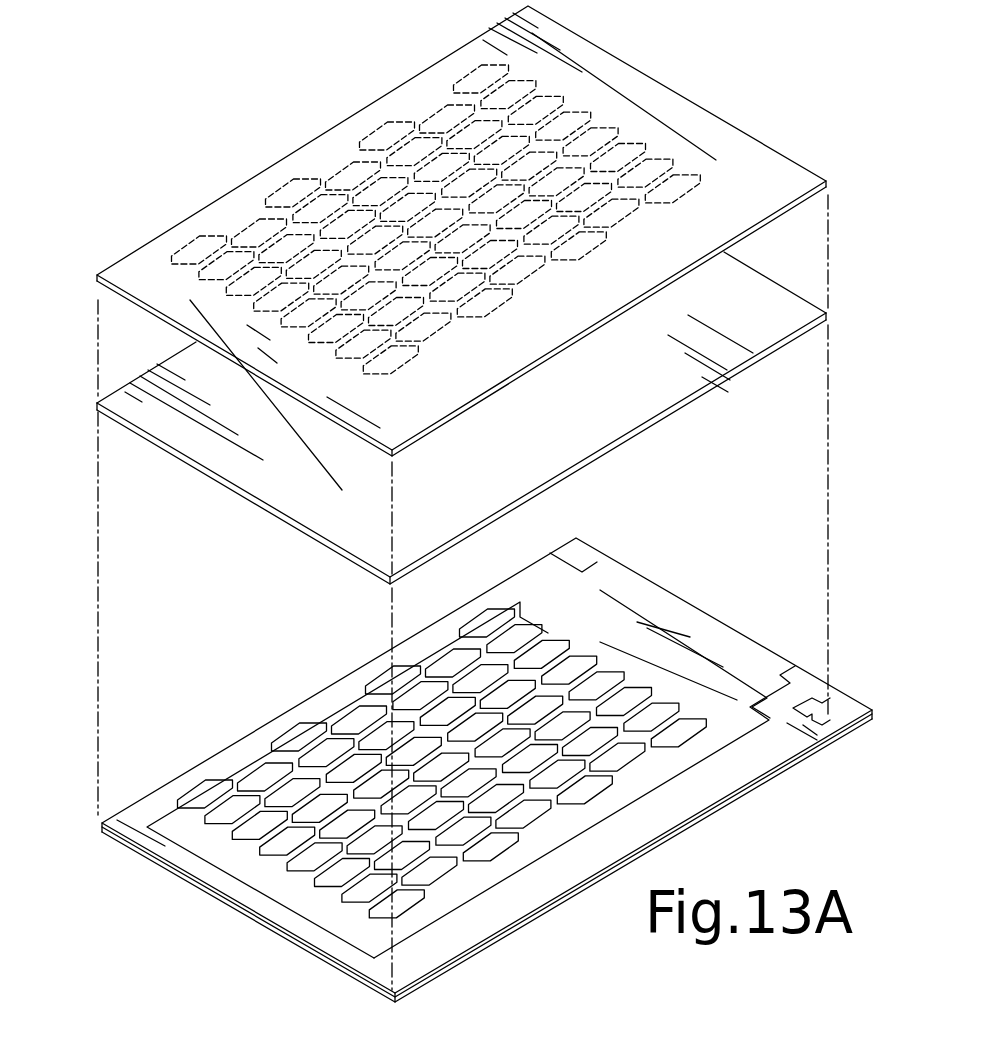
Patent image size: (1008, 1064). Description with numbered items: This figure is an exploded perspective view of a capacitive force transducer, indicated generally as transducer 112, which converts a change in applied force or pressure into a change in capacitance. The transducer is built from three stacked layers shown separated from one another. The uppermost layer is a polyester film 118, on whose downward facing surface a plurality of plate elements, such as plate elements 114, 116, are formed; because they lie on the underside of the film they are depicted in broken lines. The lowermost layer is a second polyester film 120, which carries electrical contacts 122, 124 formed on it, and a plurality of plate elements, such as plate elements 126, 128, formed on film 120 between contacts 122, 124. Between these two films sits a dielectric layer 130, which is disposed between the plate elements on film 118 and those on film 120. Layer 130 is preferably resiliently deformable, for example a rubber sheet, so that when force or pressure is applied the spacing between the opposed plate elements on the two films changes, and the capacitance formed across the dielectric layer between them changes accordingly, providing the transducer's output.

The transducer 112 is at (76, 280).
The plate element 114 is at (318, 205).
The plate element 116 is at (355, 162).
The polyester film 118 is at (652, 92).
The second polyester film 120 is at (742, 648).
The electrical contact 122 is at (630, 653).
The electrical contact 124 is at (233, 857).
The plate element 126 is at (330, 755).
The plate element 128 is at (365, 763).
The dielectric layer 130 is at (262, 475).